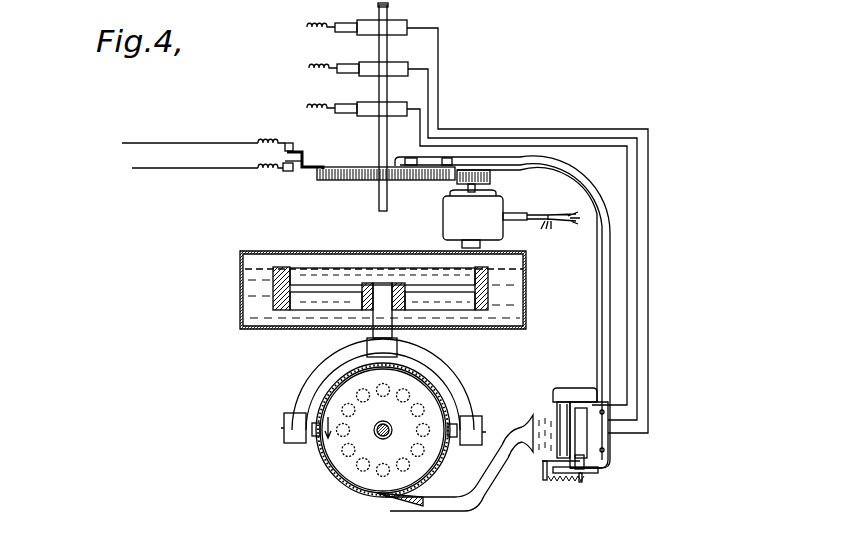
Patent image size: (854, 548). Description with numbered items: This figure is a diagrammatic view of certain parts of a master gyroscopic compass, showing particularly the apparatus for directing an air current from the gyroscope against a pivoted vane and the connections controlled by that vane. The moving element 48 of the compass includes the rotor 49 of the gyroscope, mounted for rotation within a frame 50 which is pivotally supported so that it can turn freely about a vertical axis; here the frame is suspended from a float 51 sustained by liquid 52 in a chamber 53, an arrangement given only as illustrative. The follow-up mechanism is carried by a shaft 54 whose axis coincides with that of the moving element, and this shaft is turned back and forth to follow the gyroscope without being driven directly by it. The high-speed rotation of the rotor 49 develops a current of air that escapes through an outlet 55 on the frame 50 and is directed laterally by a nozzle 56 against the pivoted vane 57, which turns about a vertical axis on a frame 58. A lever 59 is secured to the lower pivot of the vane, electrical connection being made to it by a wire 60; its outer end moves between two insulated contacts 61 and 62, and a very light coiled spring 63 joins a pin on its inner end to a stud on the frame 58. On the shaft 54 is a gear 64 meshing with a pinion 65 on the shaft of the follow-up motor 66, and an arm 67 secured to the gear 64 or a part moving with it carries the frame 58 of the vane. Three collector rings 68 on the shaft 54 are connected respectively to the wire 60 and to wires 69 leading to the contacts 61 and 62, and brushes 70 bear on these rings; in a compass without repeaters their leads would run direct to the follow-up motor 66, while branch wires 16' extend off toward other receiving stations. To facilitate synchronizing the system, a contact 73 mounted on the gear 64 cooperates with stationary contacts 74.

The branch wires 16' is at (549, 228).
The moving element 48 is at (320, 372).
The rotor 49 is at (361, 454).
The frame 50 is at (318, 451).
The float 51 is at (279, 267).
The liquid 52 is at (261, 288).
The chamber 53 is at (243, 297).
The shaft 54 is at (379, 143).
The outlet 55 is at (412, 508).
The nozzle 56 is at (523, 424).
The pivoted vane 57 is at (557, 408).
The frame 58 is at (578, 390).
The lever 59 is at (543, 463).
The wire 60 is at (650, 308).
The insulated contact 61 is at (588, 460).
The insulated contact 62 is at (600, 470).
The coiled spring 63 is at (570, 482).
The gear 64 is at (333, 181).
The pinion 65 is at (492, 179).
The follow-up motor 66 is at (485, 219).
The arm 67 is at (600, 273).
The collector rings 68 is at (372, 108).
The wires 69 is at (630, 275).
The brushes 70 is at (335, 105).
The contact 73 is at (306, 128).
The stationary contacts 74 is at (285, 143).